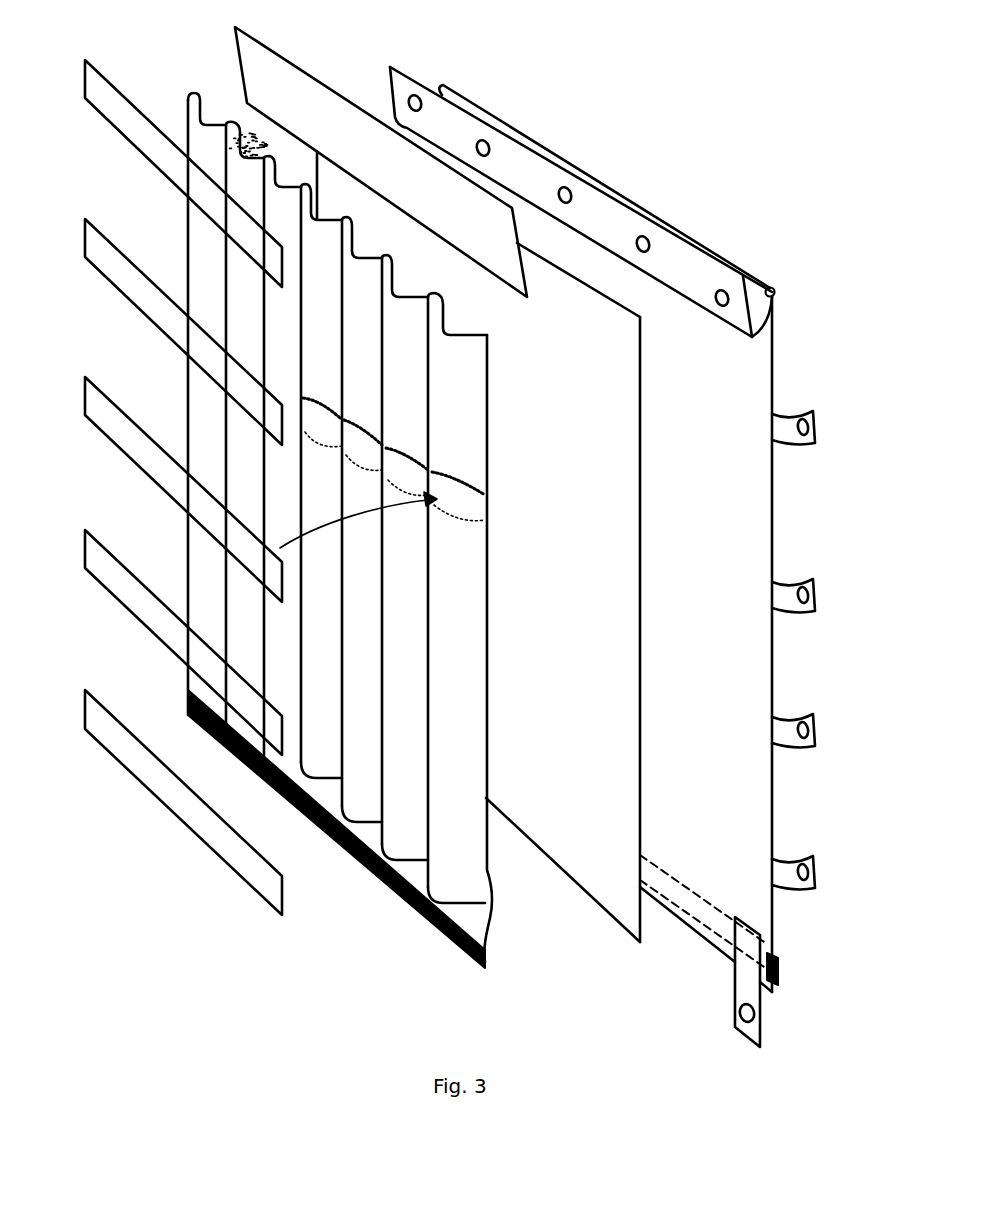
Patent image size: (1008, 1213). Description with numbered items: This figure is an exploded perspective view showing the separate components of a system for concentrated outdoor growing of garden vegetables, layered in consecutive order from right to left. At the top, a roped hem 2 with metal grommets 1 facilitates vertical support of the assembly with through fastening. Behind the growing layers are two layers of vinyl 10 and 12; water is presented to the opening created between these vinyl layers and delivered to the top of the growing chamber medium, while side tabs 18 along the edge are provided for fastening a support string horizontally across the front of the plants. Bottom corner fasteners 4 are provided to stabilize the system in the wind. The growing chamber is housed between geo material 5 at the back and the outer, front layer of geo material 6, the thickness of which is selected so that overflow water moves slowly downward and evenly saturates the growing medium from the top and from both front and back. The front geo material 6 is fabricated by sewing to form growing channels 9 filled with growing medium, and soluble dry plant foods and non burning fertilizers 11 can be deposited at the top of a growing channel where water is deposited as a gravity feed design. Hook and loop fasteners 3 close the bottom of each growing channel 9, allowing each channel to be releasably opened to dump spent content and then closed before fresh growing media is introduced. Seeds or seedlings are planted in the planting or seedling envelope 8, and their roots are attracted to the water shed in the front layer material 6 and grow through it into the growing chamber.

The metal grommets 1 is at (640, 239).
The roped hem 2 is at (777, 292).
The hook and loop fasteners 3 is at (478, 968).
The bottom corner fasteners 4 is at (757, 1035).
The geo material 5 is at (565, 575).
The geo material 6 is at (446, 642).
The planting or seedling envelope 8 is at (145, 140).
The growing channel 9 is at (396, 824).
The vinyl layer 10 is at (419, 197).
The soluble dry plant foods and non burning fertilizers 11 is at (256, 140).
The vinyl layer 12 is at (691, 539).
The side tabs 18 is at (797, 448).